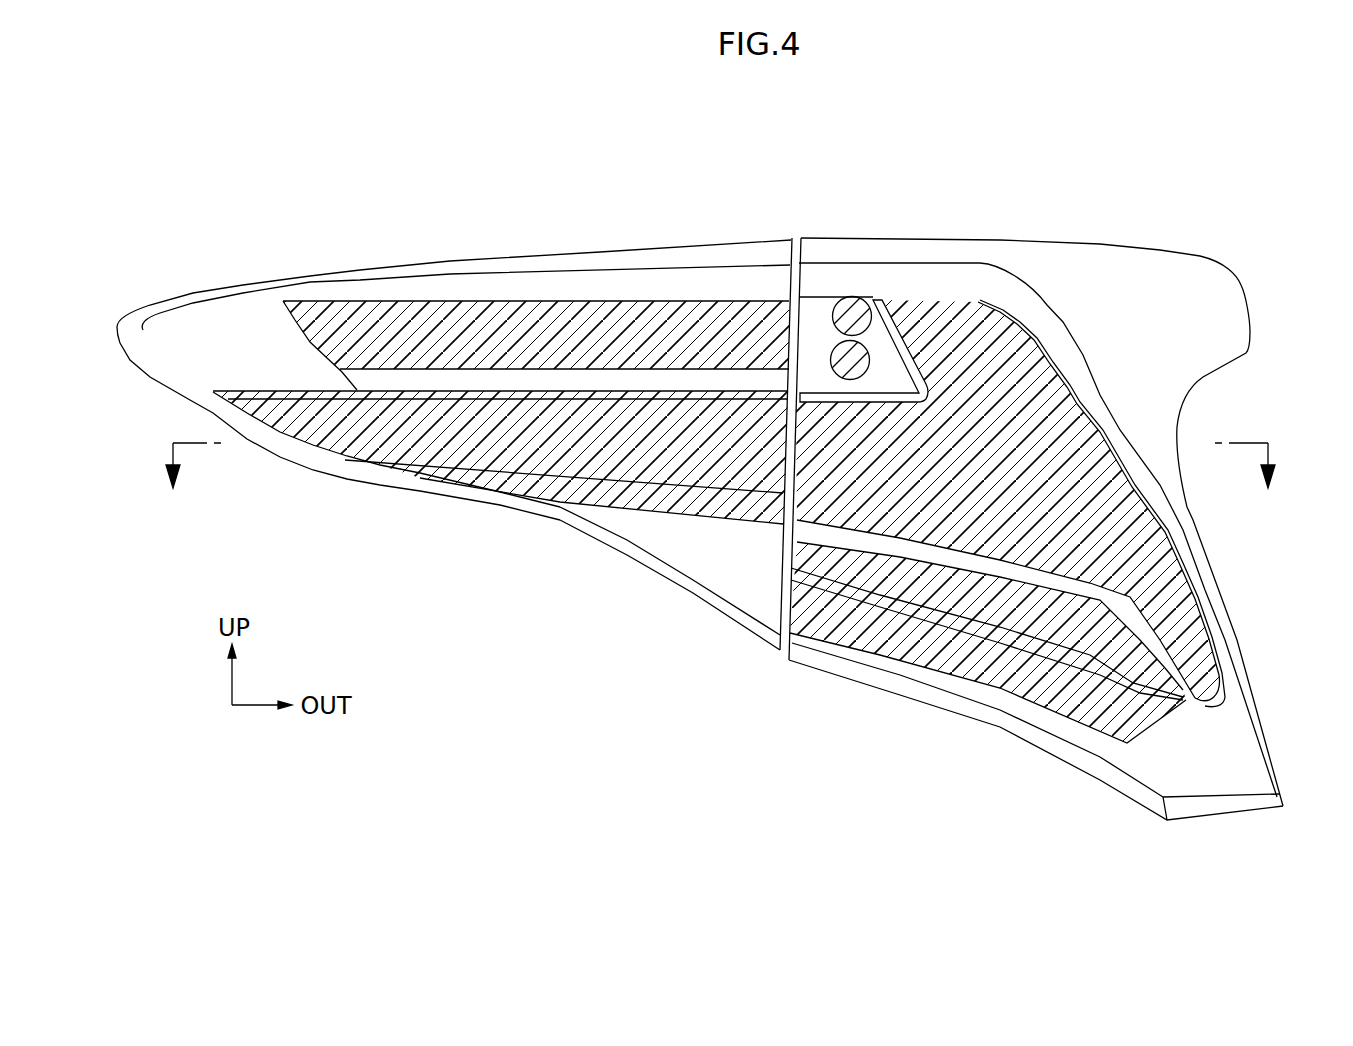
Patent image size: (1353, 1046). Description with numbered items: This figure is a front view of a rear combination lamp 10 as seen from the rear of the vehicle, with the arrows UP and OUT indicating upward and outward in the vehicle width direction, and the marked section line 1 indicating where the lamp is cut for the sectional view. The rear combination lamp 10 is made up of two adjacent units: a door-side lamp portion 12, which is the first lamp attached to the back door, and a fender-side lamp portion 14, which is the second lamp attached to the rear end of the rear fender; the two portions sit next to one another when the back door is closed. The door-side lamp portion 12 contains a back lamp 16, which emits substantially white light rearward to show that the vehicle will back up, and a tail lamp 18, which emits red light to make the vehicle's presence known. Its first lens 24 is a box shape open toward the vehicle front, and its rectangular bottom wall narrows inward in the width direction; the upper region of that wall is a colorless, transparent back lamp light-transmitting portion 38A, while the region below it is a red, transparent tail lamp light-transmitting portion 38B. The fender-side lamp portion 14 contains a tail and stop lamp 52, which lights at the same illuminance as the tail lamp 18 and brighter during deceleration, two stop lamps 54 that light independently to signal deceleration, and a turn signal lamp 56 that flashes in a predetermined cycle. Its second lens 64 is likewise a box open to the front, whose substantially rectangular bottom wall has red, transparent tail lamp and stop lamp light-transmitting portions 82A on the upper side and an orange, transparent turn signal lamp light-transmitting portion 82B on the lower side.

The section line 1- 1 is at (718, 466).
The rear combination lamp 10 is at (788, 158).
The door-side lamp portion 12 is at (711, 232).
The fender-side lamp portion 14 is at (829, 227).
The back lamp 16 is at (412, 301).
The tail lamp 18 is at (652, 510).
The first lens 24 is at (349, 477).
The back lamp light-transmitting portion 38A is at (513, 301).
The tail lamp light-transmitting portion 38B is at (498, 452).
The tail and stop lamp 52 is at (1018, 327).
The stop lamps 54 is at (866, 303).
The turn signal lamp 56 is at (978, 690).
The second lens 64 is at (1059, 333).
The tail lamp and stop lamp light-transmitting portions 82A is at (832, 354).
The turn signal lamp light-transmitting portion 82B is at (893, 642).